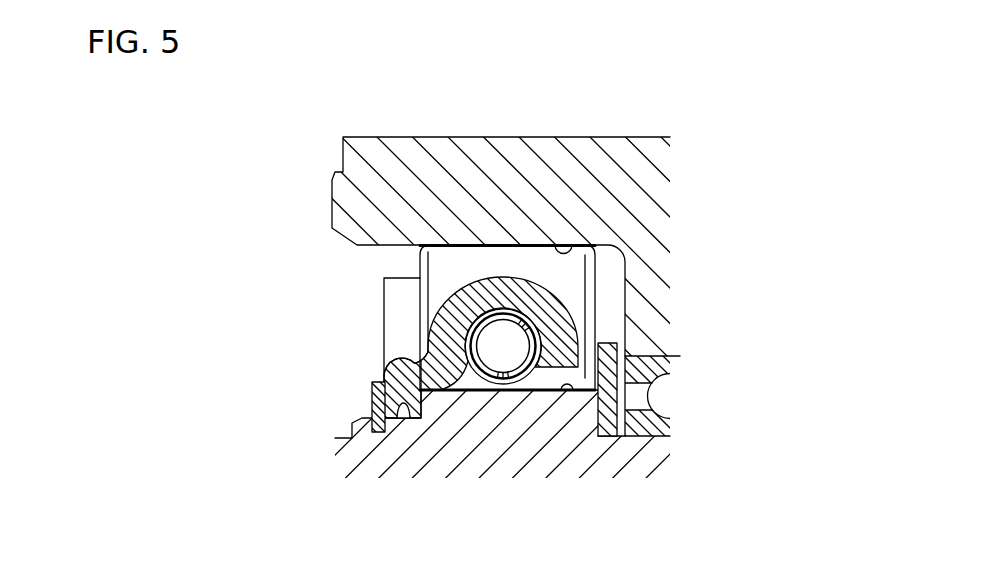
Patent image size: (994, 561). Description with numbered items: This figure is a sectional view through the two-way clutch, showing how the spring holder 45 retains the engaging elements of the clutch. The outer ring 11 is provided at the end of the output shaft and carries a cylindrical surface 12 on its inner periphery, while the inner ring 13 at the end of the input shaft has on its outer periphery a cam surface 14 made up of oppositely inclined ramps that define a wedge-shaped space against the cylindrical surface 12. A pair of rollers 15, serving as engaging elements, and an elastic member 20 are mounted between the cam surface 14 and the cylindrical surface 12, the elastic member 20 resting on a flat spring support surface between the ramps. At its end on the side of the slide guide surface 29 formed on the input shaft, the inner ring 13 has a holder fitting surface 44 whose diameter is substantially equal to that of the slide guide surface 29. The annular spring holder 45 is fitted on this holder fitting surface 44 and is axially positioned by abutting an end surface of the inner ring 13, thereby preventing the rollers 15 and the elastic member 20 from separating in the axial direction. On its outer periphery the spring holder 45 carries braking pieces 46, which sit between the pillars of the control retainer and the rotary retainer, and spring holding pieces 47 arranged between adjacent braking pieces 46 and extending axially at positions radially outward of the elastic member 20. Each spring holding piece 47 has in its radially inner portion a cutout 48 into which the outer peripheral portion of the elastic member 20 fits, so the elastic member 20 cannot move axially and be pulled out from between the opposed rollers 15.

The outer ring 11 is at (399, 152).
The cylindrical surface 12 is at (568, 255).
The inner ring 13 is at (518, 445).
The cam surface 14 is at (573, 393).
The rollers 15 is at (580, 287).
The elastic member 20 is at (497, 383).
The slide guide surface 29 is at (348, 438).
The holder fitting surface 44 is at (401, 406).
The spring holder 45 is at (391, 358).
The braking pieces 46 is at (395, 295).
The spring holding pieces 47 is at (490, 280).
The cutout 48 is at (521, 320).